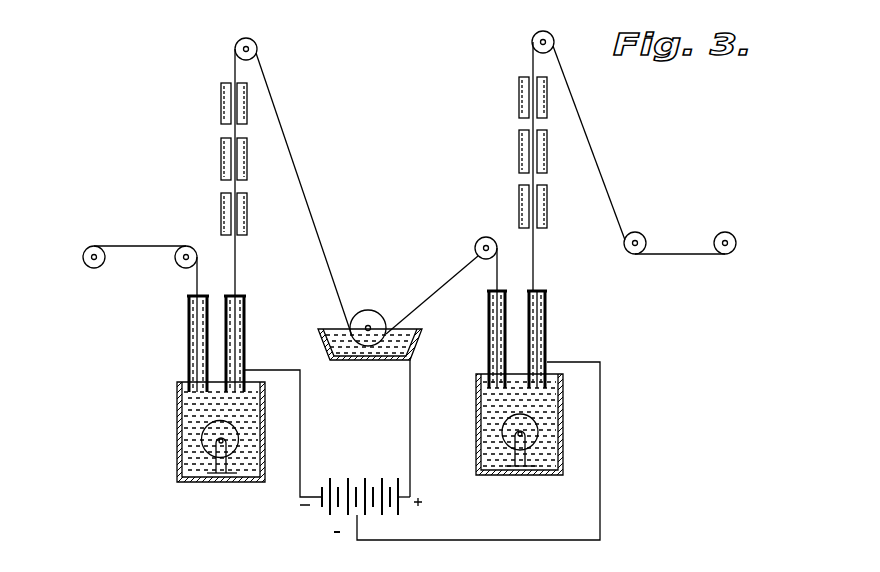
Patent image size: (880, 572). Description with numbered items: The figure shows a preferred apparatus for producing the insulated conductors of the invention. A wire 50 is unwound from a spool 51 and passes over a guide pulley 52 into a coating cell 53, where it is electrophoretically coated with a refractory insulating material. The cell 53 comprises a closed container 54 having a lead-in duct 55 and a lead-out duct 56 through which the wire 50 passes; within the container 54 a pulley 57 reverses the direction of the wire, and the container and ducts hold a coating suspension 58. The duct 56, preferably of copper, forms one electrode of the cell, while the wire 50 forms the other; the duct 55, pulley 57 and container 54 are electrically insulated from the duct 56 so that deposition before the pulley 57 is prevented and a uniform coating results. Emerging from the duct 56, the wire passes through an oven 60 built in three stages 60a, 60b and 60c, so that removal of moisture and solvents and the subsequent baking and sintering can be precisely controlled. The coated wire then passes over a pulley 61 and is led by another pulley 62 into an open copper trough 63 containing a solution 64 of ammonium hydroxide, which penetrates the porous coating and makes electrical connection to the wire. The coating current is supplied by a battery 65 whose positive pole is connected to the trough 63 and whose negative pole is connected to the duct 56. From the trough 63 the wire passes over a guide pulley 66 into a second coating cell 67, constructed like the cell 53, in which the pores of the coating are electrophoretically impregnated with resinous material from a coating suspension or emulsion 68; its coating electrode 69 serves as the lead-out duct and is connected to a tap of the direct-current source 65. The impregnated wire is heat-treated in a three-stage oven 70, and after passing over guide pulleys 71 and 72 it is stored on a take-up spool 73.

The wire 50 is at (136, 246).
The spool 51 is at (84, 263).
The guide pulley 52 is at (175, 260).
The coating cell 53 is at (172, 431).
The closed container 54 is at (185, 482).
The lead-in duct 55 is at (188, 329).
The lead-out duct 56 is at (246, 333).
The pulley 57 is at (208, 445).
The coating suspension 58 is at (185, 382).
The oven 60 is at (218, 161).
The first oven stage 60a is at (247, 222).
The second oven stage 60b is at (247, 162).
The third oven stage 60c is at (220, 100).
The pulley 61 is at (257, 47).
The pulley 62 is at (366, 314).
The copper trough 63 is at (421, 340).
The ammonium hydroxide solution 64 is at (338, 332).
The battery 65 is at (325, 513).
The guide pulley 66 is at (474, 242).
The coating cell 67 is at (484, 466).
The coating suspension or emulsion 68 is at (547, 450).
The coating electrode 69 is at (547, 317).
The three-stage oven 70 is at (515, 156).
The guide pulley 71 is at (532, 42).
The guide pulley 72 is at (643, 232).
The take-up spool 73 is at (728, 232).